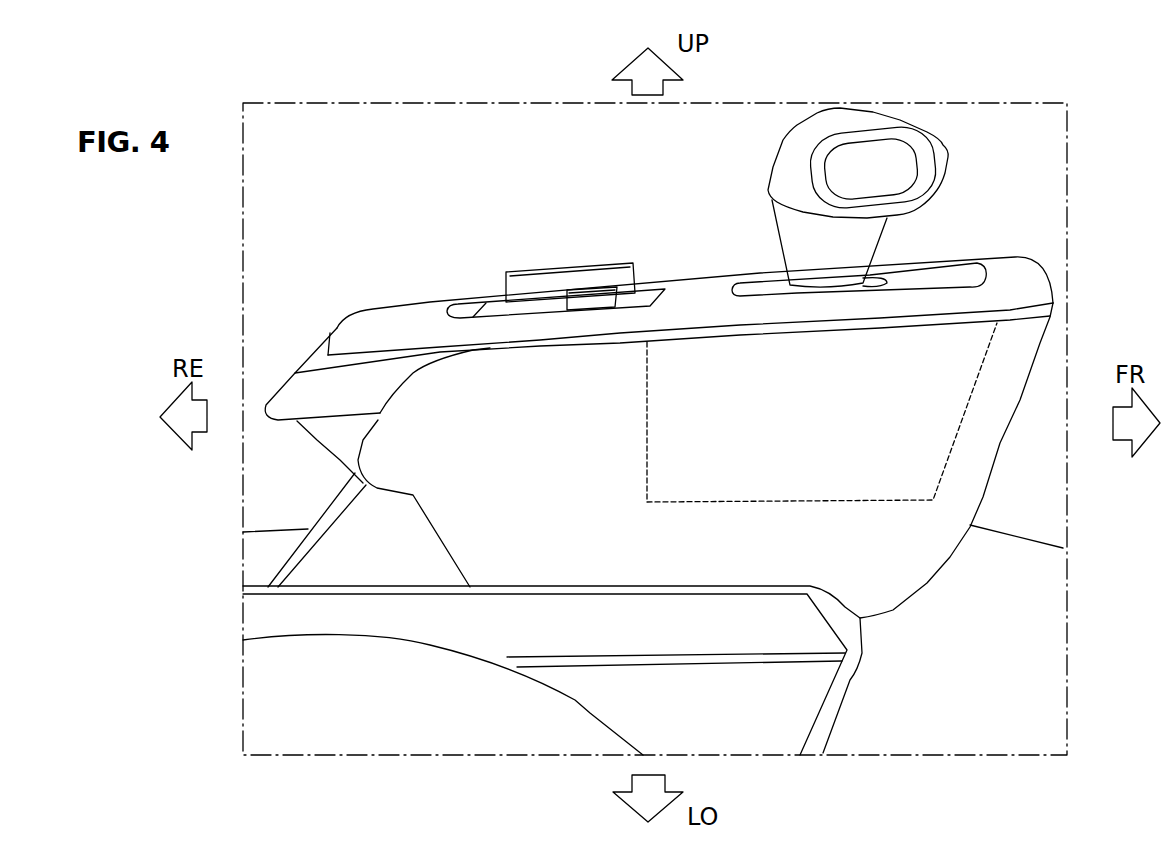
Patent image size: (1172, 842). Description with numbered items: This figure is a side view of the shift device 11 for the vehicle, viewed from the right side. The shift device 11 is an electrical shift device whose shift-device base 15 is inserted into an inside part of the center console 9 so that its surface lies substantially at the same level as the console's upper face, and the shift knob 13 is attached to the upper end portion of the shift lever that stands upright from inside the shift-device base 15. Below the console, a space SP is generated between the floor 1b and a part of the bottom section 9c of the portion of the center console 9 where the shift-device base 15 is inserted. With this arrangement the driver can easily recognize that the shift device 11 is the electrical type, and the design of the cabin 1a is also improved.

The cabin 1a is at (1001, 132).
The floor 1b is at (1023, 710).
The center console 9 is at (1040, 343).
The bottom section 9c is at (900, 613).
The shift device 11 is at (740, 223).
The shift knob 13 is at (782, 146).
The shift-device base 15 is at (922, 467).
The space SP is at (913, 647).